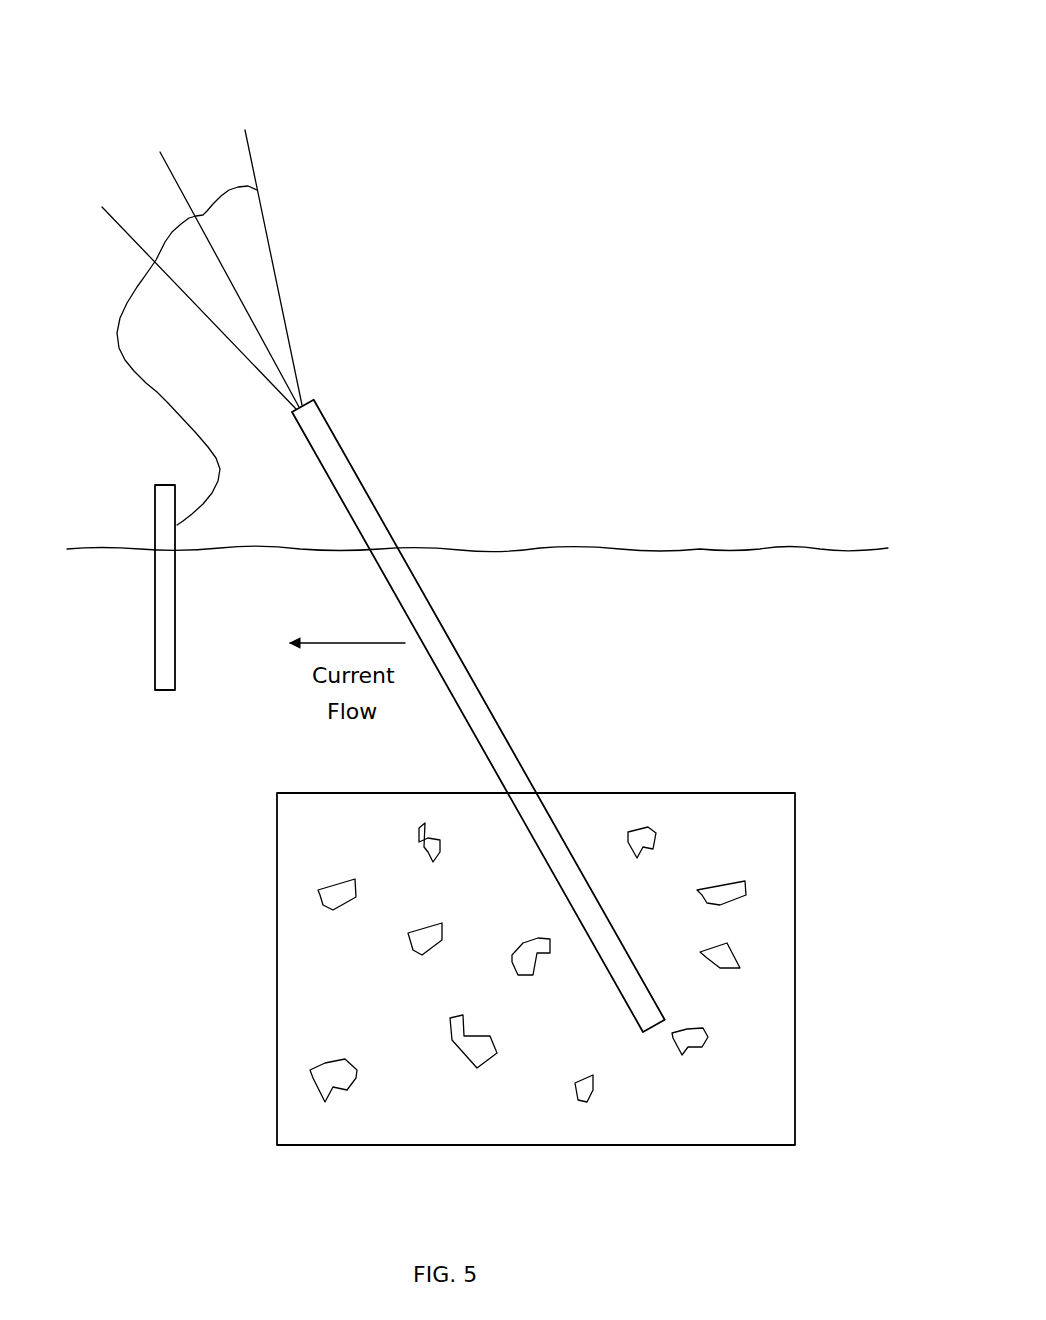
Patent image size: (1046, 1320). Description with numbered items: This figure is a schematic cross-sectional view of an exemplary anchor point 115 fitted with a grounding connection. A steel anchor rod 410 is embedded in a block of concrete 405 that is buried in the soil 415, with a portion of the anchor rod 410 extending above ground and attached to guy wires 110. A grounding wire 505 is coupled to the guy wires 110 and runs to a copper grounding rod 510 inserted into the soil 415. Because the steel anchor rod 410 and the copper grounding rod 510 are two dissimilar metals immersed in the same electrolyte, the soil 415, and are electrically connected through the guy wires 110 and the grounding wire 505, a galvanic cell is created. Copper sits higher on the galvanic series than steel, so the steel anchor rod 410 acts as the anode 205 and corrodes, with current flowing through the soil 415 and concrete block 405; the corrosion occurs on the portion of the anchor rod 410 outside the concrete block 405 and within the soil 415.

The guy wires 110 is at (116, 218).
The anchor point 115 is at (612, 51).
The anode 205 is at (514, 687).
The concrete block 405 is at (735, 1100).
The anchor rod 410 is at (435, 610).
The soil 415 is at (765, 637).
The grounding wire 505 is at (157, 390).
The grounding rod 510 is at (153, 587).